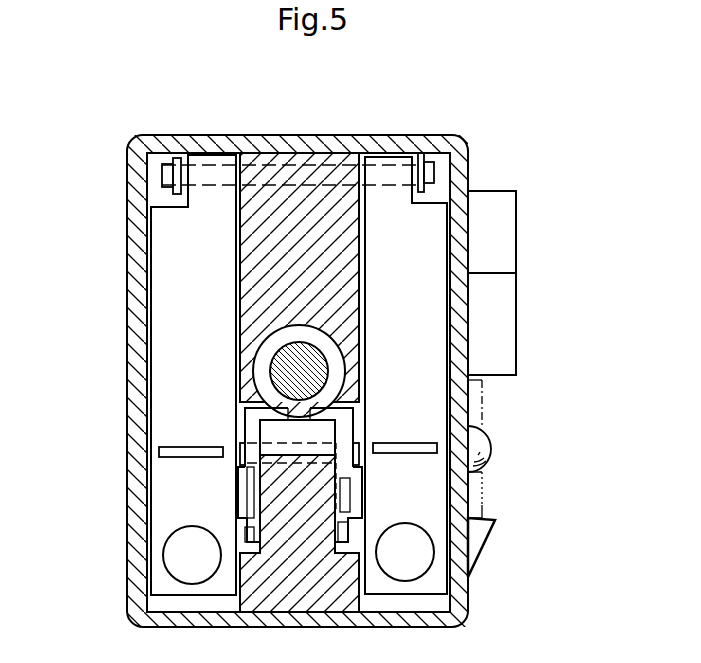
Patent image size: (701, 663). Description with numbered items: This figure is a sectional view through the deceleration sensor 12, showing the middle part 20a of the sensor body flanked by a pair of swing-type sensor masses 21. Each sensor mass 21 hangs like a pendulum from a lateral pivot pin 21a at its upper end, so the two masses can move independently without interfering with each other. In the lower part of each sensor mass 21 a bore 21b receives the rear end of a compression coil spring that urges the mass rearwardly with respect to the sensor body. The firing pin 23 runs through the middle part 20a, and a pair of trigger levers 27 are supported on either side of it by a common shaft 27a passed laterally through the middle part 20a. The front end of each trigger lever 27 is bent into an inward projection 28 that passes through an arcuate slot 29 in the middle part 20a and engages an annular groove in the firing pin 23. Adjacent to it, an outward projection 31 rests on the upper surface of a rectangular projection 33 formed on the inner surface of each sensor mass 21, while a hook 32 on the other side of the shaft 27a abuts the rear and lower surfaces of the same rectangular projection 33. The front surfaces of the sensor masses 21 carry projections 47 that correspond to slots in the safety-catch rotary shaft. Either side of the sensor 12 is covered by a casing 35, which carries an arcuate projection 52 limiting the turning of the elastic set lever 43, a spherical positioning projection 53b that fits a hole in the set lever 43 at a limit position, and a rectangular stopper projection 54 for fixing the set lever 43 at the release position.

The deceleration sensor 12 is at (503, 153).
The middle part of the sensor body 20a is at (281, 199).
The sensor mass 21 is at (160, 409).
The lateral pivot pin 21a is at (437, 165).
The bore 21b is at (170, 552).
The firing pin 23 is at (329, 359).
The trigger lever 27 is at (353, 428).
The common shaft 27a is at (237, 457).
The inward projection 28 is at (270, 410).
The arcuate slot 29 is at (262, 442).
The outward projection 31 is at (358, 472).
The hook 32 is at (350, 533).
The rectangular projection 33 is at (244, 500).
The casing 35 is at (413, 135).
The set lever 43 is at (484, 508).
The projection 47 is at (159, 452).
The arcuate projection 52 is at (512, 296).
The spherical positioning projection 53b is at (492, 452).
The stopper projection 54 is at (490, 534).